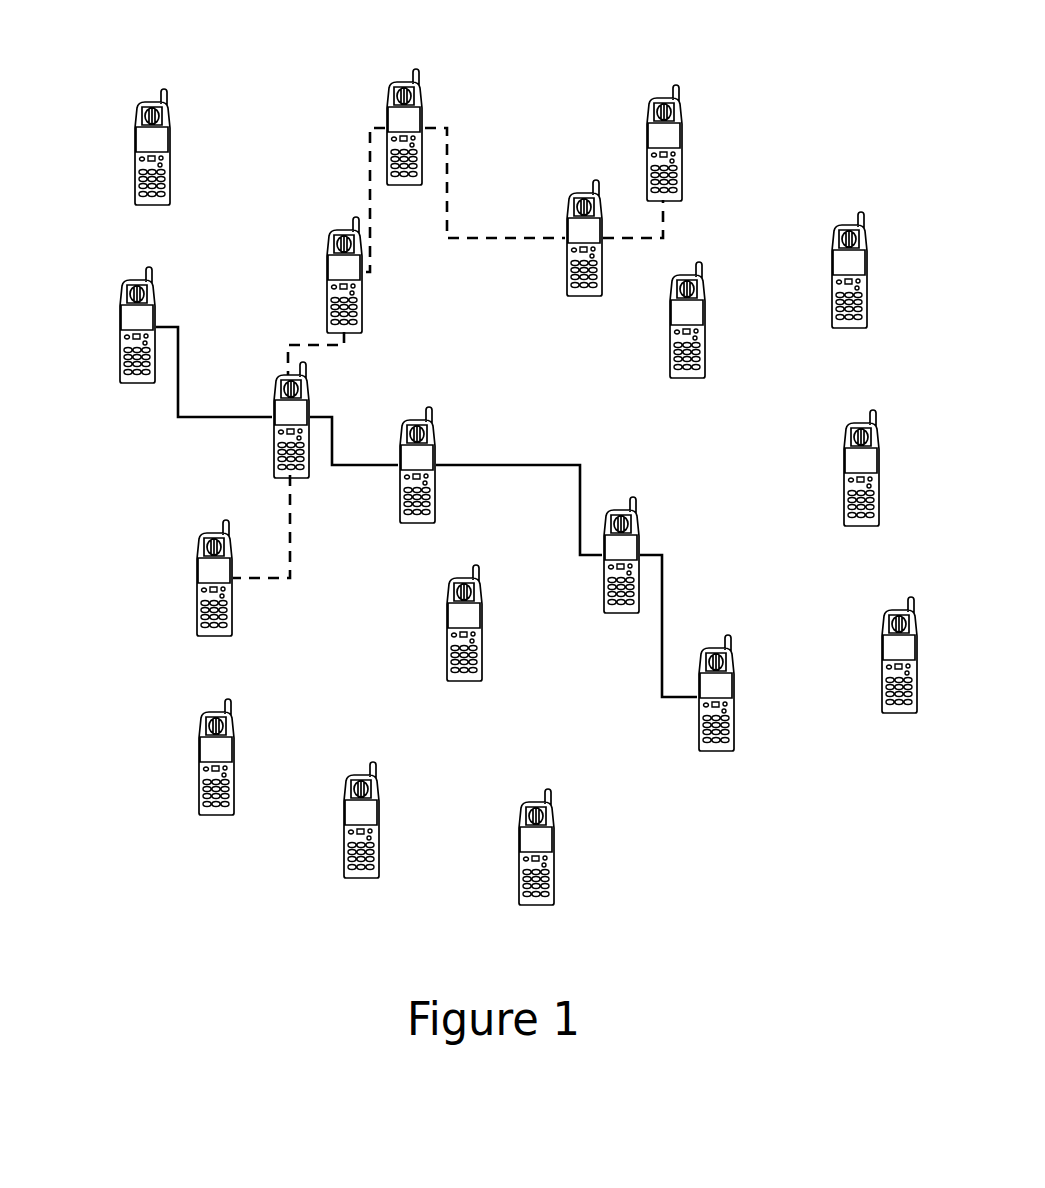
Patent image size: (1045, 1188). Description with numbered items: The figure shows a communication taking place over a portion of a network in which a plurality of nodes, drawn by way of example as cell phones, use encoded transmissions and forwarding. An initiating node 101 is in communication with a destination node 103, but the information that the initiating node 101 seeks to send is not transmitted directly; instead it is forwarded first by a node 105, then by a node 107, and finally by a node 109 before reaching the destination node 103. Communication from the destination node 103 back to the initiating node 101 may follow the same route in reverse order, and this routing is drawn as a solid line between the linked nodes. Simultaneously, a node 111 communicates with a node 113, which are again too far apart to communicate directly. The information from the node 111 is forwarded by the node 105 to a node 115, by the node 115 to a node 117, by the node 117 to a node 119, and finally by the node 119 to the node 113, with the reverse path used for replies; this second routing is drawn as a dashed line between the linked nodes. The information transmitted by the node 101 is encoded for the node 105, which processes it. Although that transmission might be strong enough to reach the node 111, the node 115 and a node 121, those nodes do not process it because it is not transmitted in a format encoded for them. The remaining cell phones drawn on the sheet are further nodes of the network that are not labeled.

The initiating node 101 is at (112, 328).
The destination node 103 is at (695, 738).
The node 105 is at (270, 463).
The node 107 is at (420, 412).
The node 109 is at (598, 607).
The node 111 is at (188, 585).
The node 113 is at (663, 88).
The node 115 is at (315, 275).
The node 117 is at (403, 77).
The node 119 is at (577, 188).
The node 121 is at (150, 92).